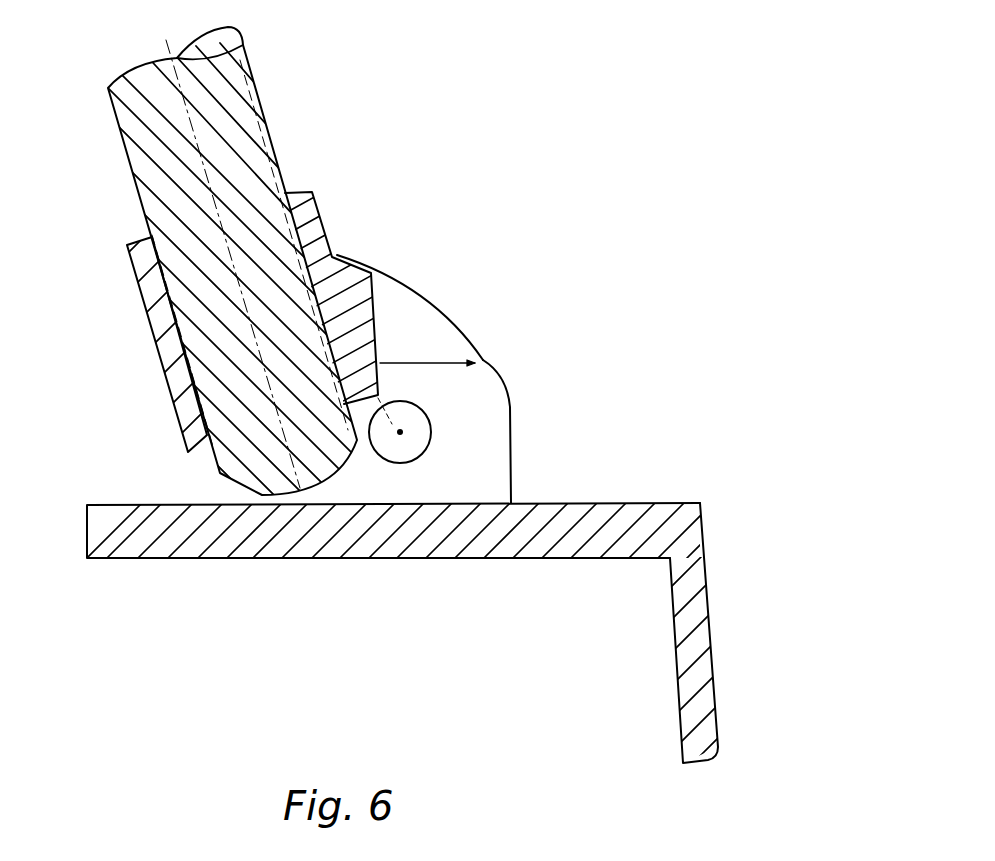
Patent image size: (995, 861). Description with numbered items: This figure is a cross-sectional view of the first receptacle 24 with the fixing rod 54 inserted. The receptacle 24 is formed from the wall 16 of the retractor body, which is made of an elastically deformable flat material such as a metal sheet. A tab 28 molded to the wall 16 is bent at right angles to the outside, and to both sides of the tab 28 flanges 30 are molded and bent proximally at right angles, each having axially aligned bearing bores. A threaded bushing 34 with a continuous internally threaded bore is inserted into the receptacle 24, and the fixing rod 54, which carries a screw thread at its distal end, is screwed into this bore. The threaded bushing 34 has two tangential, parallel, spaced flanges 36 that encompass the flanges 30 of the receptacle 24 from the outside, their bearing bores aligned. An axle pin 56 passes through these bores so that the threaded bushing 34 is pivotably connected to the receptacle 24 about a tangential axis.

The fixing rod 54 is at (218, 112).
The threaded bushing 34 is at (168, 343).
The first receptacle 24 is at (537, 232).
The flanges of the threaded bushing 36 is at (410, 323).
The flanges of the receptacle 30 is at (473, 415).
The axle pin 56 is at (402, 432).
The tab 28 is at (190, 540).
The wall 16 is at (690, 658).